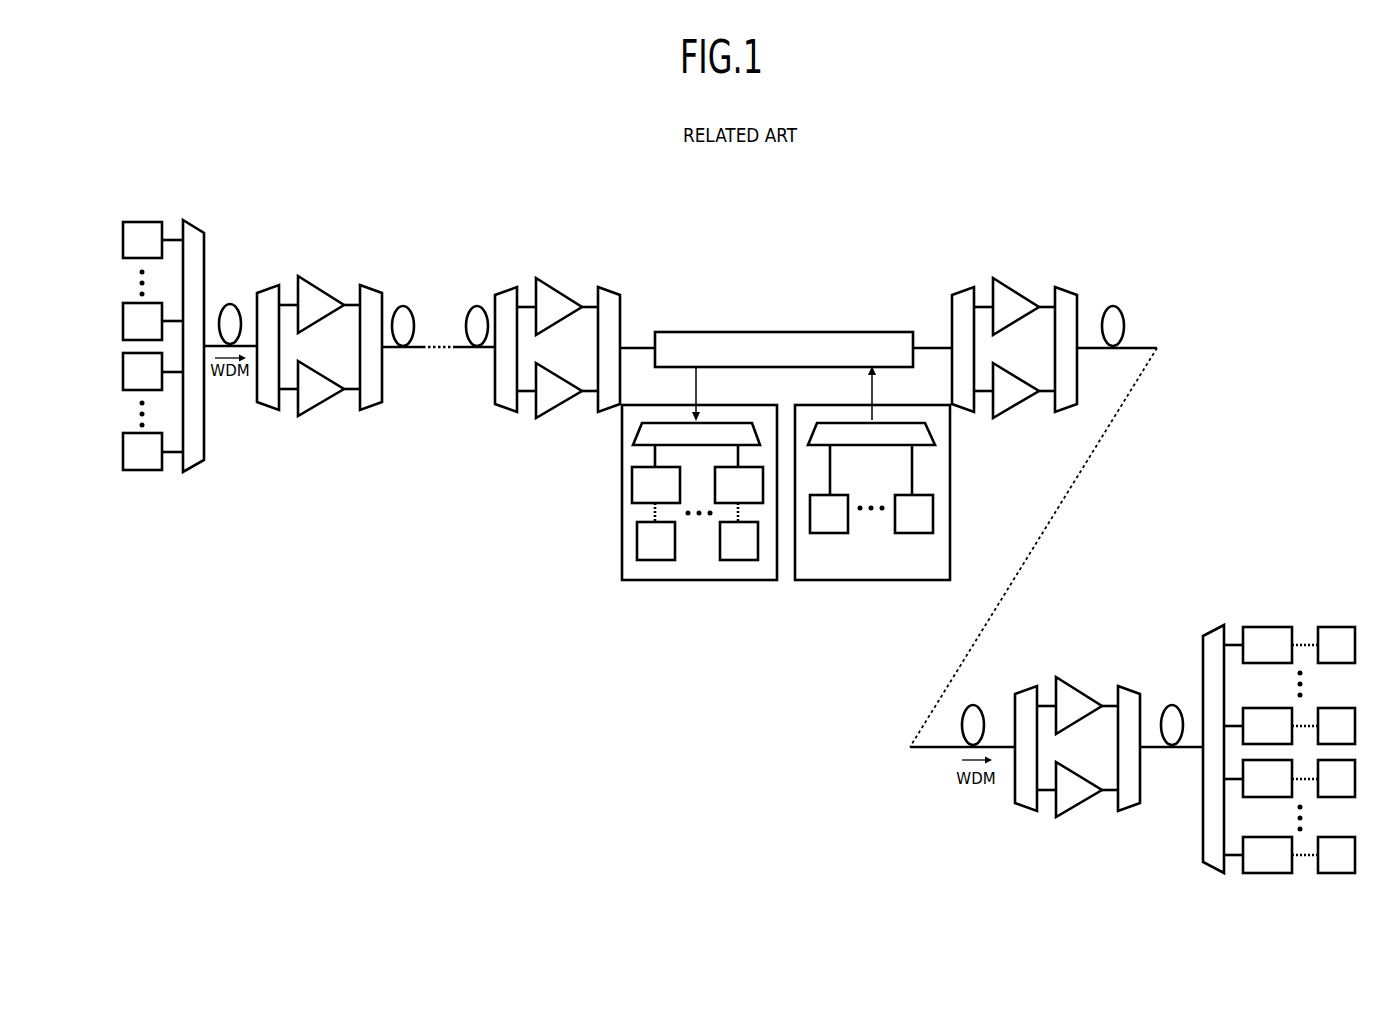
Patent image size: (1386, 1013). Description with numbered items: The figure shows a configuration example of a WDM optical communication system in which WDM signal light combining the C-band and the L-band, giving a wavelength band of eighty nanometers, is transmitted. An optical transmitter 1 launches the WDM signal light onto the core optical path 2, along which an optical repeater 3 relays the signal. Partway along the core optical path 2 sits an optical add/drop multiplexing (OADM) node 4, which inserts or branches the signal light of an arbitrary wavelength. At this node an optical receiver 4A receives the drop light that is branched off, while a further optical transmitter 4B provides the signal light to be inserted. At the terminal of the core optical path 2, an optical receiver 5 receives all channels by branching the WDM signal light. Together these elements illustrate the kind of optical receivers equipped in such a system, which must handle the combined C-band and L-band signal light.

The optical transmitter 1 is at (187, 202).
The core optical path 2 is at (228, 303).
The optical repeater 3 is at (309, 250).
The optical add/drop multiplexing (OADM) node 4 is at (495, 243).
The optical receiver 4A is at (698, 580).
The optical transmitter 4B is at (865, 580).
The optical receiver 5 is at (1281, 599).